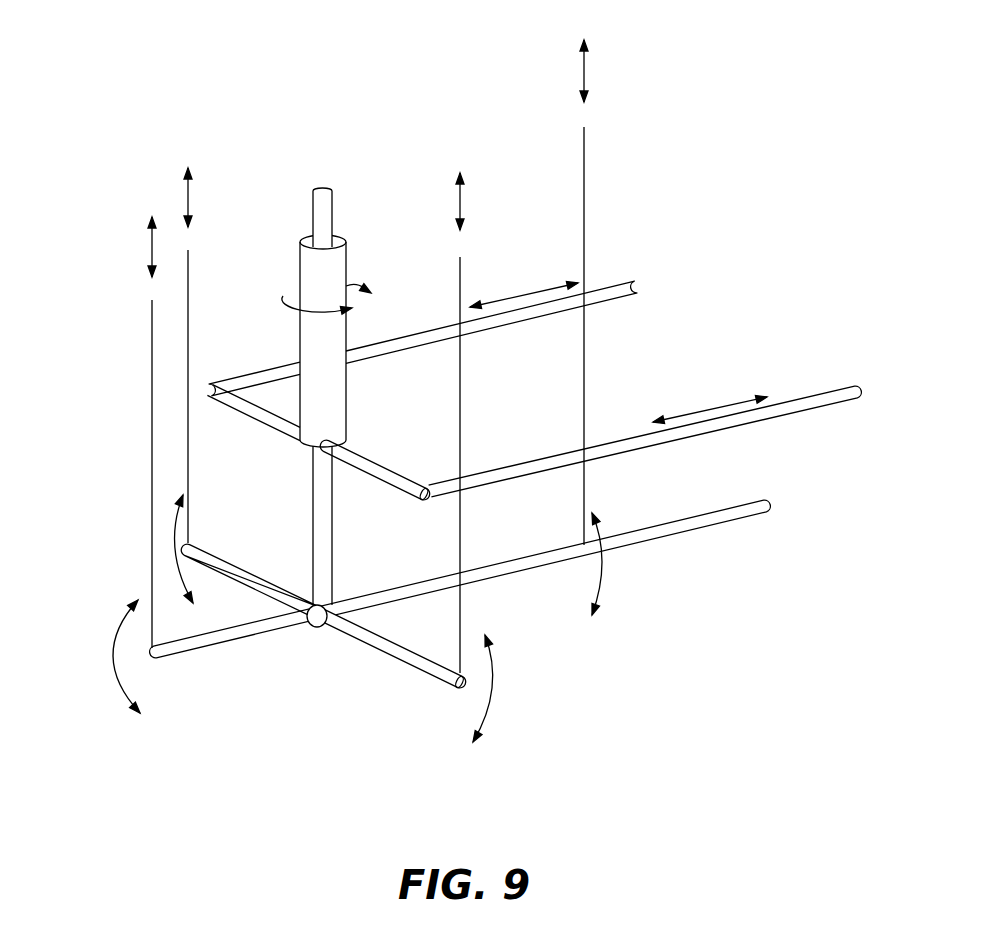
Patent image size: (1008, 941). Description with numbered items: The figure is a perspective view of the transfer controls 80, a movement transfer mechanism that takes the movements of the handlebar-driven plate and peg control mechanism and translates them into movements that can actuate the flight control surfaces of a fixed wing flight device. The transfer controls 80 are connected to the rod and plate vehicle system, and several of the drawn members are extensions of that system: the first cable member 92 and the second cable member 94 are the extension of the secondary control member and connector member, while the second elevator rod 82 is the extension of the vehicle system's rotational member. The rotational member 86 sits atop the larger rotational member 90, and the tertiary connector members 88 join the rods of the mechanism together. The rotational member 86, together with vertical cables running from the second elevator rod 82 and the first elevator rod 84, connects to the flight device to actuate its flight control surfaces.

The transfer controls 80 is at (733, 110).
The second elevator rod 82 is at (217, 638).
The first elevator rod 84 is at (407, 655).
The rotational member 86 is at (320, 217).
The tertiary connector members 88 is at (237, 405).
The larger rotational member 90 is at (323, 280).
The first cable member 92 is at (598, 293).
The second cable member 94 is at (832, 398).